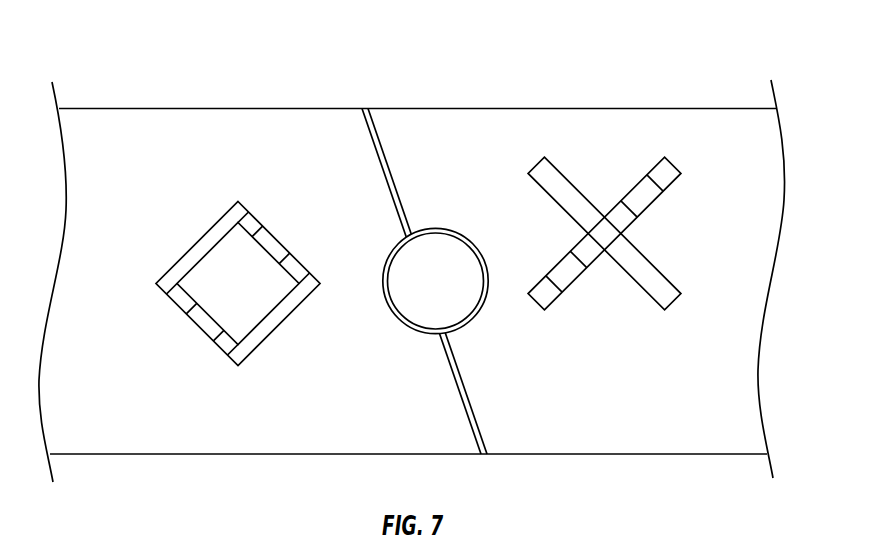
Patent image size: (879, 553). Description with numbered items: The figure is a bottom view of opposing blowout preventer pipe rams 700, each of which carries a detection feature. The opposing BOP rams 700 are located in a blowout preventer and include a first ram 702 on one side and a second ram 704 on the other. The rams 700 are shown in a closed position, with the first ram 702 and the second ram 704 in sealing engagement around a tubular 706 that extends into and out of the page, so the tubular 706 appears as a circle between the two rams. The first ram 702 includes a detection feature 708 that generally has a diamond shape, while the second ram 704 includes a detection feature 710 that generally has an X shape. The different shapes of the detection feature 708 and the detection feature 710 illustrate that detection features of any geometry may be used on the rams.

The opposing BOP pipe rams 700 is at (378, 65).
The first ram 702 is at (237, 164).
The second ram 704 is at (492, 162).
The tubular 706 is at (455, 292).
The detection feature 708 is at (289, 340).
The detection feature 710 is at (607, 311).